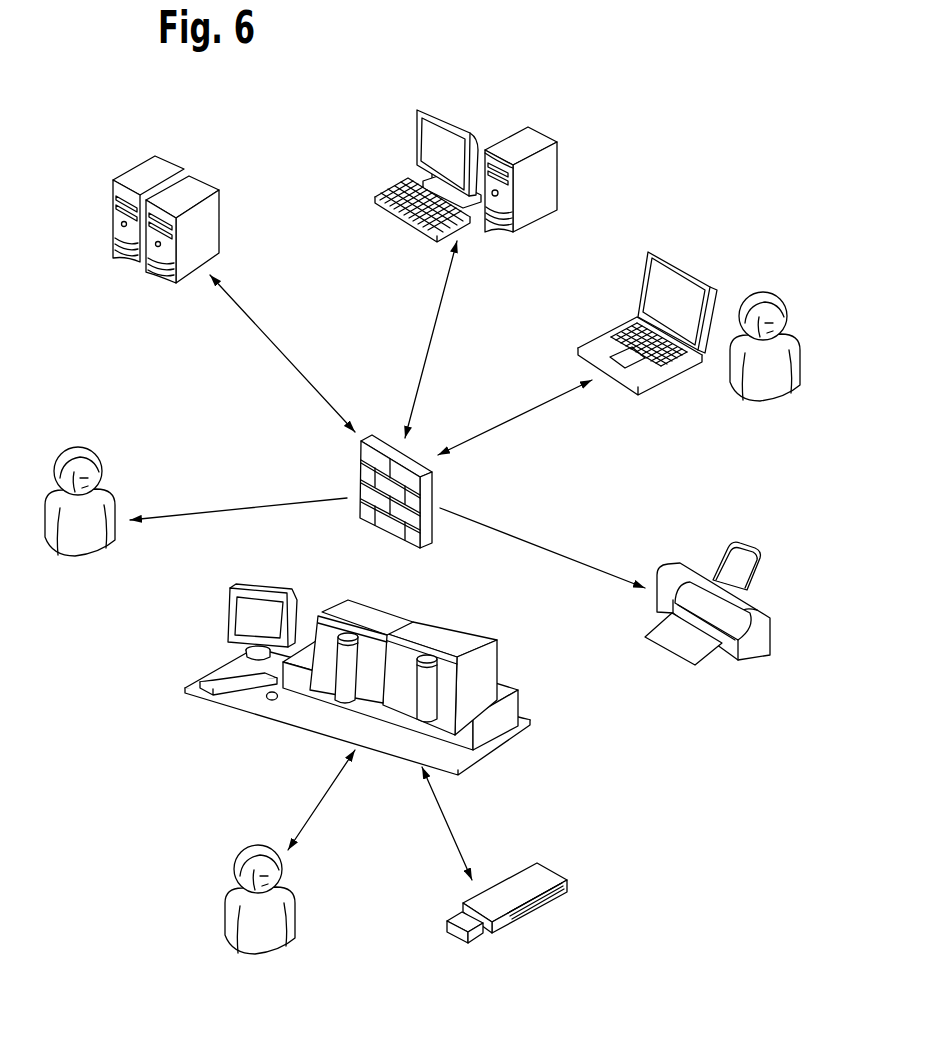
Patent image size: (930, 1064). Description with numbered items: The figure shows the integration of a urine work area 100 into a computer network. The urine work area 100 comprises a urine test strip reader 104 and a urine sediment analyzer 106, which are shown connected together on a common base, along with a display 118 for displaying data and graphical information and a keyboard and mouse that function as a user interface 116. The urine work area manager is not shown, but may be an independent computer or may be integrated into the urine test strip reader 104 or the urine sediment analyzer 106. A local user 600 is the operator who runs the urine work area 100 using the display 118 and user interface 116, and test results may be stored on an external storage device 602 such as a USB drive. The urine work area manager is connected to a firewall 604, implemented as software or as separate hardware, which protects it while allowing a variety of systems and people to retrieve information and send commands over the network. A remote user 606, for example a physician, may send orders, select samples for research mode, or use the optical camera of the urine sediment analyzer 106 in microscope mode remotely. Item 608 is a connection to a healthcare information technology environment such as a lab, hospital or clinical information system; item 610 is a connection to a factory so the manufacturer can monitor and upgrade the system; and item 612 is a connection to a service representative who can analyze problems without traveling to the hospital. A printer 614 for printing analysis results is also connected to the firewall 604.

The urine work area 100 is at (321, 669).
The urine test strip reader 104 is at (377, 615).
The urine sediment analyzer 106 is at (447, 633).
The user interface 116 is at (234, 729).
The display 118 is at (240, 615).
The local user 600 is at (245, 943).
The external storage device 602 is at (540, 903).
The firewall 604 is at (358, 478).
The remote user 606 is at (72, 460).
The connection to a healthcare information technology environment 608 is at (140, 176).
The connection to a factory 610 is at (552, 158).
The connection to a service representative 612 is at (766, 294).
The printer 614 is at (680, 563).